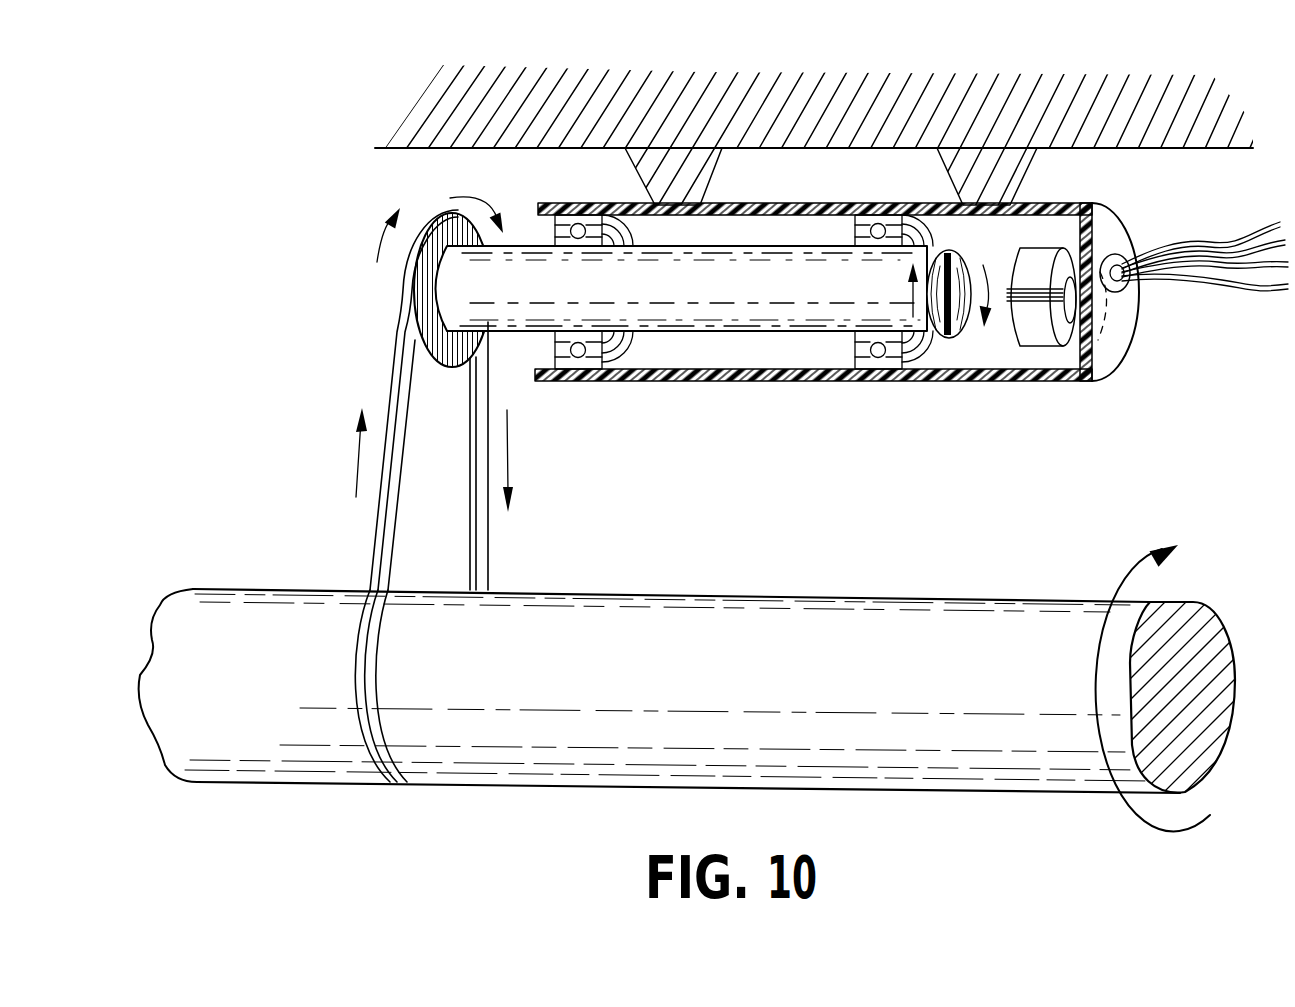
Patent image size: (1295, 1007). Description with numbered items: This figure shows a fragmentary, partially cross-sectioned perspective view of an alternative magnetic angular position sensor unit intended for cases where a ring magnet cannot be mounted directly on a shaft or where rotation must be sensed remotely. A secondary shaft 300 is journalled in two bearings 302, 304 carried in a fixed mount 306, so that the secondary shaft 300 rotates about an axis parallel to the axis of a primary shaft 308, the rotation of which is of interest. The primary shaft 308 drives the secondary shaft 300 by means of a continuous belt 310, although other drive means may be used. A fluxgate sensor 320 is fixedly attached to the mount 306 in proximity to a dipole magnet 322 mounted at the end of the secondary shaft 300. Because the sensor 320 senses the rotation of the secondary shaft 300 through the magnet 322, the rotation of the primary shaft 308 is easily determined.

The secondary shaft 300 is at (735, 293).
The bearing 302 is at (574, 370).
The bearing 304 is at (873, 362).
The fixed mount 306 is at (765, 205).
The primary shaft 308 is at (597, 730).
The continuous belt 310 is at (377, 554).
The fluxgate sensor 320 is at (1067, 264).
The dipole magnet 322 is at (955, 255).